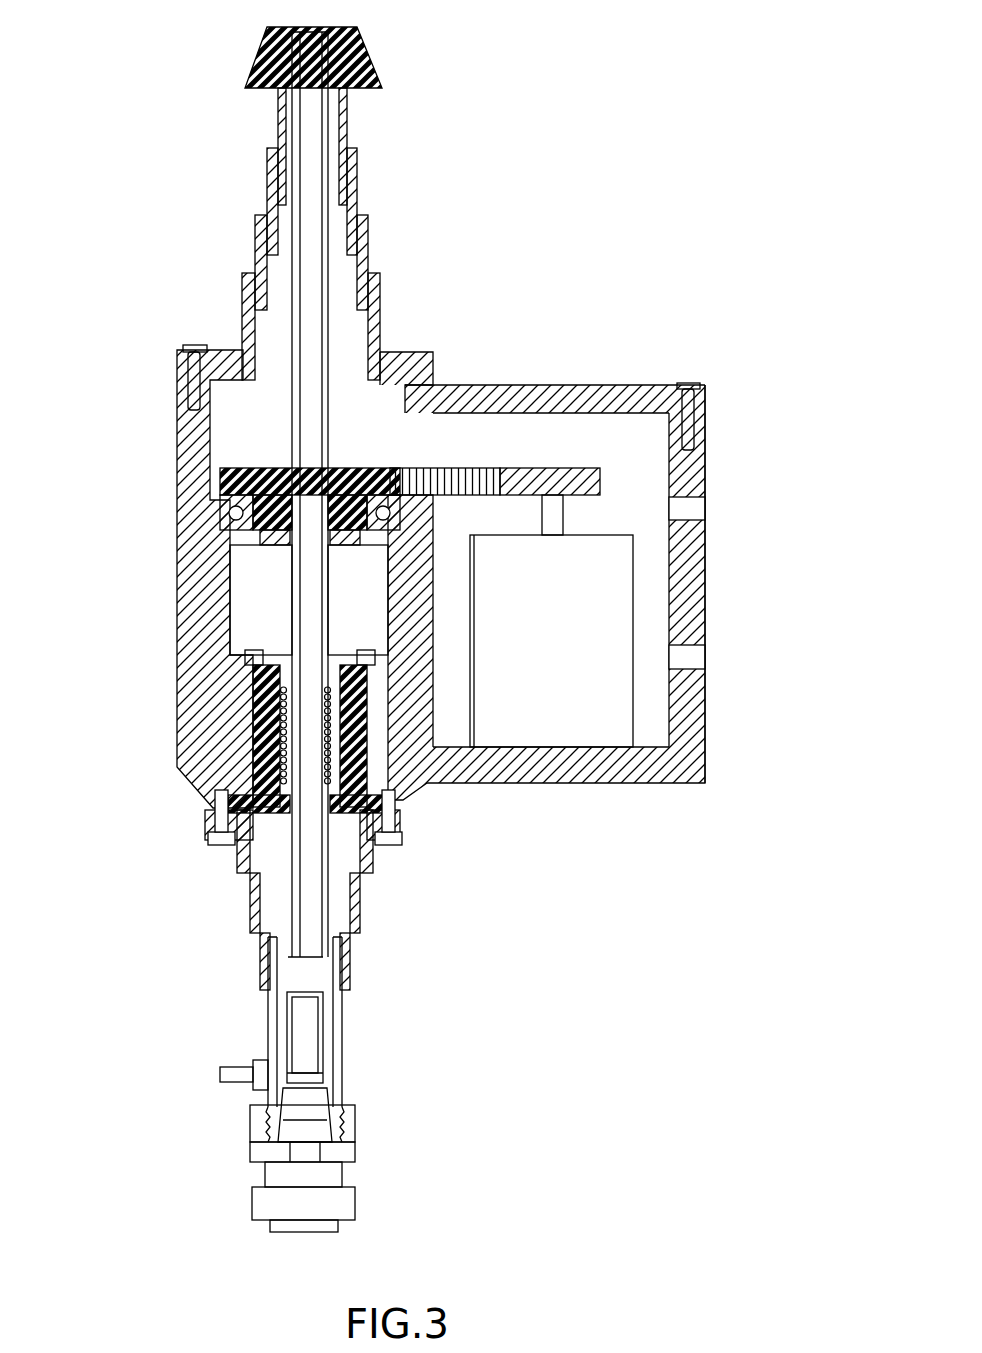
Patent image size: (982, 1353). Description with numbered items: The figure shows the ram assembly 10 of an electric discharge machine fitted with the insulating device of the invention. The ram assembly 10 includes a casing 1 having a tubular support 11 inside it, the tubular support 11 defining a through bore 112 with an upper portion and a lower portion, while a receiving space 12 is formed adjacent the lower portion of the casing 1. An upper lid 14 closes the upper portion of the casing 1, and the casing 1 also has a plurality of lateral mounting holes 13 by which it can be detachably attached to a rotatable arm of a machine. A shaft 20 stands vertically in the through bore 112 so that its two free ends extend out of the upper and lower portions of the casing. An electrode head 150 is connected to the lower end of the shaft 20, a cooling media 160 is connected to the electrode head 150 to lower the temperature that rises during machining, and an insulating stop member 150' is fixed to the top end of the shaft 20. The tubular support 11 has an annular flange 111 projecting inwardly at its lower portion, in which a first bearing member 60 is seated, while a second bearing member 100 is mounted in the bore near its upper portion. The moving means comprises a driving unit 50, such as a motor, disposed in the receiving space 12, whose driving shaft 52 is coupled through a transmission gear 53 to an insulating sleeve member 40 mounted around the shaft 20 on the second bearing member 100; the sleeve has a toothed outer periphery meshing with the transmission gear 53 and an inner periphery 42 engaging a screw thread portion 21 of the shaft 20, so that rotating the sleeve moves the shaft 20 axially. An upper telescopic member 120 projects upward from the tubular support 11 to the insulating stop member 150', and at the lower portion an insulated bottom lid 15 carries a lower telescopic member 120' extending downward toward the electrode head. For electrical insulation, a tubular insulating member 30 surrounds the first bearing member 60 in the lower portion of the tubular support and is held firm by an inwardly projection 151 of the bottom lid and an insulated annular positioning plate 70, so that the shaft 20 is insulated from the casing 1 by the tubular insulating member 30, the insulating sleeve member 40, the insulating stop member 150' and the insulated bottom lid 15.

The casing 1 is at (712, 618).
The ram assembly 10 is at (618, 340).
The tubular support 11 is at (412, 523).
The receiving space 12 is at (660, 488).
The lateral mounting holes 13 is at (695, 512).
The upper lid 14 is at (515, 395).
The insulated bottom lid 15 is at (412, 843).
The shaft 20 is at (283, 357).
The screw thread portion 21 is at (288, 275).
The tubular insulating member 30 is at (255, 742).
The insulating sleeve member 40 is at (245, 470).
The inner periphery 42 is at (195, 400).
The driving unit 50 is at (635, 712).
The driving shaft 52 is at (558, 516).
The transmission gear 53 is at (490, 472).
The first bearing member 60 is at (275, 760).
The insulated annular positioning plate 70 is at (265, 660).
The second bearing member 100 is at (220, 520).
The annular flange 111 is at (253, 715).
The through bore 112 is at (235, 615).
The upper telescopic member 120 is at (380, 199).
The lower telescopic member 120' is at (359, 900).
The electrode head 150 is at (355, 1084).
The insulating stop member 150' is at (385, 57).
The inwardly projection of insulated bottom lid 151 is at (408, 815).
The cooling media 160 is at (235, 1065).